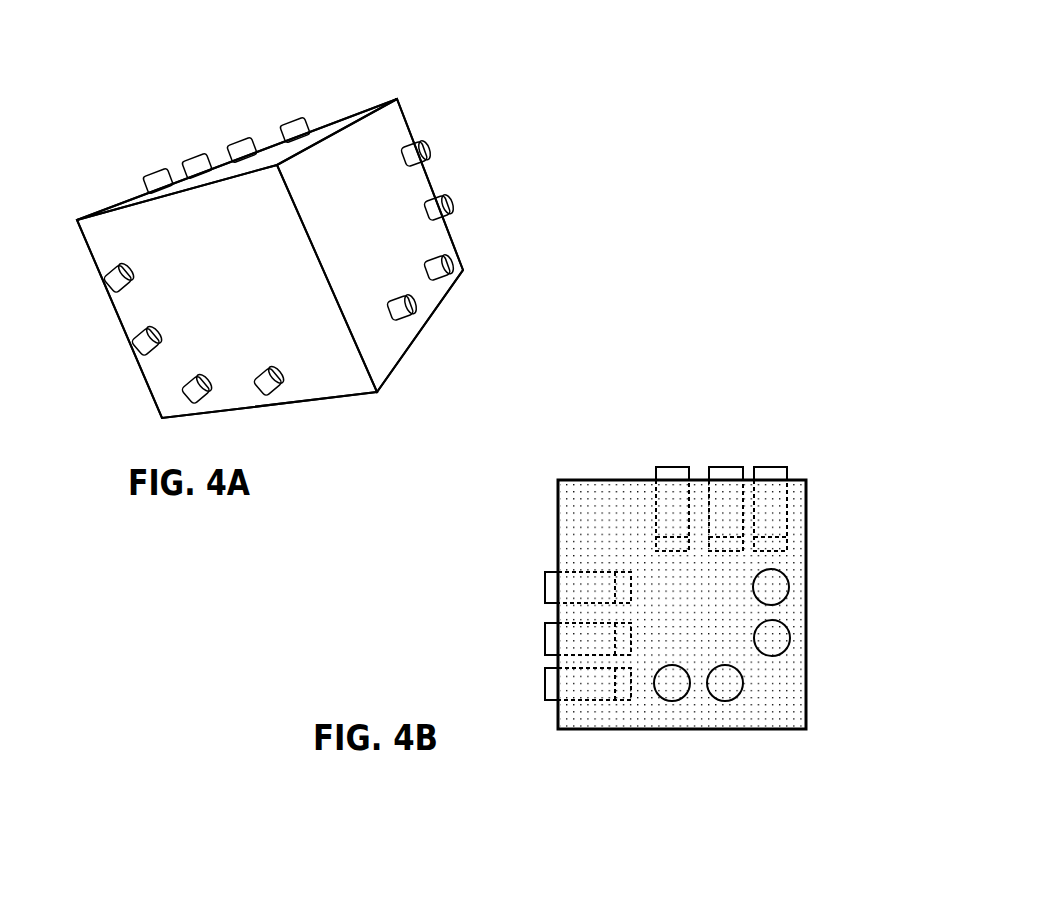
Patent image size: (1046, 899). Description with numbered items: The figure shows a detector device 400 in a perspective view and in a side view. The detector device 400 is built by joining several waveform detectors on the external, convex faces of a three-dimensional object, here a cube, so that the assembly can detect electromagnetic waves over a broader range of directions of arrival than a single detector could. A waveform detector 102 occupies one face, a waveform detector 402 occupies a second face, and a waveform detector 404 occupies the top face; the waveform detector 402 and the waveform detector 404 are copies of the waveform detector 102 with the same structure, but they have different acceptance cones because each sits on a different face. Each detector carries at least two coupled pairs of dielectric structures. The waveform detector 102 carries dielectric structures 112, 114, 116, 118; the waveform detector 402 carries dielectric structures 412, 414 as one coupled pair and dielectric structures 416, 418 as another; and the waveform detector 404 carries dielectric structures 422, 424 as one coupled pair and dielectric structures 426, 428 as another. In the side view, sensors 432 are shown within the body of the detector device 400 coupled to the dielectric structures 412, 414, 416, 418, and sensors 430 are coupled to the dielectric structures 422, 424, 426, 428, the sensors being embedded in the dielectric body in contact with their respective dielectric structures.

In FIG. 4A, the detector device 400 is at (140, 63).
In FIG. 4B, the detector device 400 is at (778, 406).
In FIG. 4A, the waveform detector 402 is at (240, 306).
In FIG. 4A, the waveform detector 404 is at (362, 116).
In FIG. 4A, the waveform detector 102 is at (408, 231).
In FIG. 4B, the waveform detector 102 is at (618, 521).
In FIG. 4A, the dielectric structure 112 is at (432, 140).
In FIG. 4B, the dielectric structure 112 is at (788, 572).
In FIG. 4A, the dielectric structure 114 is at (453, 207).
In FIG. 4B, the dielectric structure 114 is at (787, 625).
In FIG. 4A, the dielectric structure 116 is at (453, 270).
In FIG. 4B, the dielectric structure 116 is at (725, 700).
In FIG. 4A, the dielectric structure 118 is at (418, 312).
In FIG. 4B, the dielectric structure 118 is at (672, 700).
In FIG. 4A, the dielectric structure 412 is at (278, 397).
In FIG. 4B, the dielectric structure 412 is at (545, 687).
In FIG. 4A, the dielectric structure 414 is at (203, 407).
In FIG. 4A, the dielectric structure 416 is at (133, 350).
In FIG. 4B, the dielectric structure 416 is at (545, 642).
In FIG. 4A, the dielectric structure 418 is at (110, 293).
In FIG. 4B, the dielectric structure 418 is at (545, 590).
In FIG. 4A, the dielectric structure 422 is at (158, 176).
In FIG. 4B, the dielectric structure 422 is at (675, 467).
In FIG. 4A, the dielectric structure 424 is at (203, 150).
In FIG. 4B, the dielectric structure 424 is at (728, 467).
In FIG. 4A, the dielectric structure 426 is at (248, 135).
In FIG. 4A, the dielectric structure 428 is at (290, 118).
In FIG. 4B, the dielectric structure 428 is at (770, 467).
In FIG. 4B, the sensors 430 is at (758, 552).
In FIG. 4B, the sensors 432 is at (632, 593).